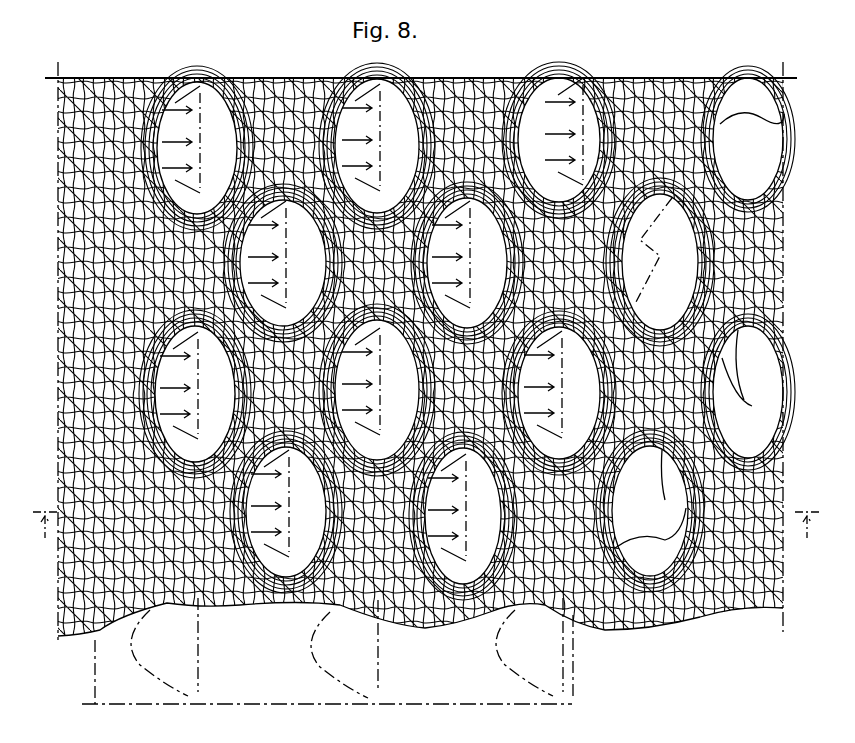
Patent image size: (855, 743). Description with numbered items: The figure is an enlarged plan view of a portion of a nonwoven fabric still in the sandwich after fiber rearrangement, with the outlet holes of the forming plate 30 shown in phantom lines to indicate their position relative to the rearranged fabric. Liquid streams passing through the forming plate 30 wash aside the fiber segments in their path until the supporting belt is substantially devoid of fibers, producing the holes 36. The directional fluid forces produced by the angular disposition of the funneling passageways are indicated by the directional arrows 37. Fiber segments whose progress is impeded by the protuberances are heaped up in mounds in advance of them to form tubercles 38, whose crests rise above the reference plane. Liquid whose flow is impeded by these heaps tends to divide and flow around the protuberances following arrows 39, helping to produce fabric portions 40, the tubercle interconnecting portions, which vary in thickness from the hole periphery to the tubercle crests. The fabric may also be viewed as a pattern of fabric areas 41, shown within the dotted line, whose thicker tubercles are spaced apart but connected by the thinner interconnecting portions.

The forming plate 30 is at (290, 717).
The holes 36 is at (205, 92).
The directional arrows 37 is at (283, 244).
The tubercles 38 is at (338, 152).
The arrows 39 is at (428, 357).
The fabric portions 40 is at (248, 380).
The fabric areas 41 is at (612, 78).